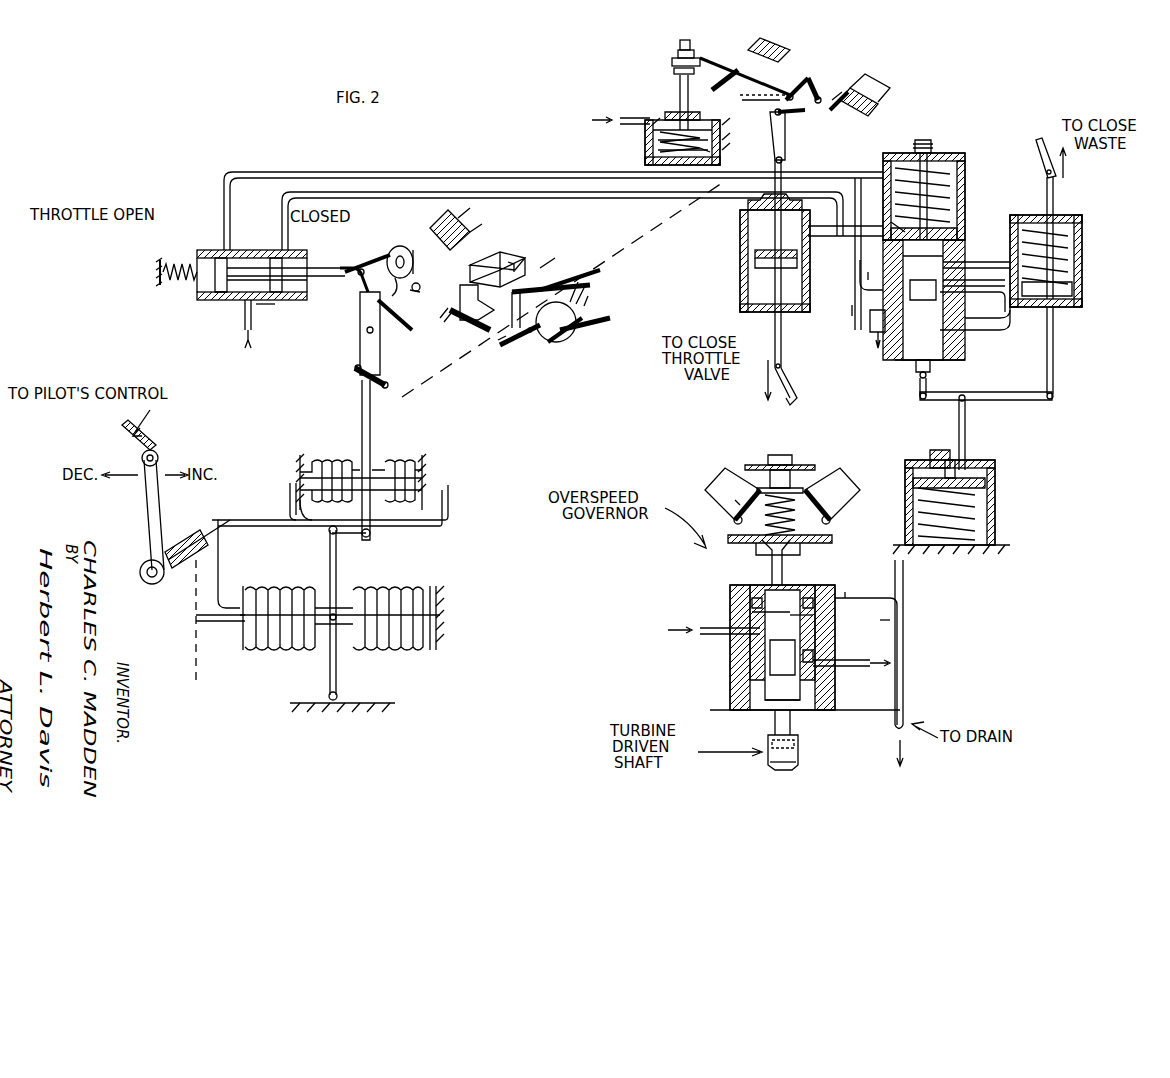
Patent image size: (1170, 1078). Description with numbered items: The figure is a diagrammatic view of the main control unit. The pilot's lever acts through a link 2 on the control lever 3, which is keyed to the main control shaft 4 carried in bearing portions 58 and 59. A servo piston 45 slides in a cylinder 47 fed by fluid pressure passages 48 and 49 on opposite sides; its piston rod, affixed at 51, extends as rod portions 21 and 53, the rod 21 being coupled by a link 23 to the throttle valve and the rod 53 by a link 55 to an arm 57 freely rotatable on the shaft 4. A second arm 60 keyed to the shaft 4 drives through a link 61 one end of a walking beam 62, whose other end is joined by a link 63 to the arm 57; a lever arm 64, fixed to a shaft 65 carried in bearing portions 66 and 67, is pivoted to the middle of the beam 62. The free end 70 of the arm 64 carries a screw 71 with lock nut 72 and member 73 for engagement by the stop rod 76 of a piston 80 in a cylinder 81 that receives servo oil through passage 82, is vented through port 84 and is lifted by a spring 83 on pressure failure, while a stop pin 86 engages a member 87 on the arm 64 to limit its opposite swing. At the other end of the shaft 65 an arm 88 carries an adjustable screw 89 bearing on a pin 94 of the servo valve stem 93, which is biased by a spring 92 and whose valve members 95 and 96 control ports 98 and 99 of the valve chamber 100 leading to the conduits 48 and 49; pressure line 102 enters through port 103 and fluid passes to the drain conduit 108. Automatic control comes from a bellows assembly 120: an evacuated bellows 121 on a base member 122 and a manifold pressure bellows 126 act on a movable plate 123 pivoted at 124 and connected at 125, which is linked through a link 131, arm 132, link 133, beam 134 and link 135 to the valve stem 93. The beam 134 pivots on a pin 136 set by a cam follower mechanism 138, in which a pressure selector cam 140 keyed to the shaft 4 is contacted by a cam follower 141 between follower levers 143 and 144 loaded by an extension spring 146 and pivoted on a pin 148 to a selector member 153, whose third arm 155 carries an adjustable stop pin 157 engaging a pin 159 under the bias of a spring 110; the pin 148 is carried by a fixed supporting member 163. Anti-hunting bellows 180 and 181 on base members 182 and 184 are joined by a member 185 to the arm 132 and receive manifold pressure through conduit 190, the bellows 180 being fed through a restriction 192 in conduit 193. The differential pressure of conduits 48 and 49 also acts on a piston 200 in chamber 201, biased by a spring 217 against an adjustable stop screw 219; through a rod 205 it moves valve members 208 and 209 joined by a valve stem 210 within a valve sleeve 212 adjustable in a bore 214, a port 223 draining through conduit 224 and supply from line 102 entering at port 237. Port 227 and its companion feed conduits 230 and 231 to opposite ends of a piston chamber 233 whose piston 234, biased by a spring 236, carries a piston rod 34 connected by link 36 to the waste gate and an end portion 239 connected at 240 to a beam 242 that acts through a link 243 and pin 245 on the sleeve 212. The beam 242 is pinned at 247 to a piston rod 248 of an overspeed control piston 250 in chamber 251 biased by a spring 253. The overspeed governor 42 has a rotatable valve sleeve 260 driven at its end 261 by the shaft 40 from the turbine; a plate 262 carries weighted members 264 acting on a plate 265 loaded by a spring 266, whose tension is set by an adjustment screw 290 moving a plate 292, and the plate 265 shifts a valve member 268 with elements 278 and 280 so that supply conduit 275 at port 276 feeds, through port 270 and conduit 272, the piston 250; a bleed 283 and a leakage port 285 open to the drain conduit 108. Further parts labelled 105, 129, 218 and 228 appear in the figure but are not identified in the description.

The link 2 is at (156, 446).
The control lever 3 is at (145, 504).
The main control shaft 4 is at (506, 344).
The piston rod 21 is at (790, 340).
The link 23 is at (800, 382).
The piston rod 34 is at (1058, 196).
The link 36 is at (1044, 170).
The shaft 40 is at (800, 760).
The overspeed governor 42 is at (736, 494).
The servo piston 45 is at (748, 262).
The cylinder 47 is at (740, 292).
The fluid pressure inlet passage 48 is at (618, 190).
The fluid pressure inlet passage 49 is at (420, 170).
The piston rod attachment 51 is at (755, 252).
The piston rod 53 is at (748, 208).
The link 55 is at (784, 150).
The arm 57 is at (804, 94).
The bearing portion 58 is at (182, 540).
The bearing portion 59 is at (858, 90).
The second arm 60 is at (834, 114).
The link 61 is at (816, 90).
The walking beam 62 is at (800, 80).
The link 63 is at (772, 118).
The lever arm 64 is at (760, 72).
The shaft 65 is at (726, 88).
The bearing portion 66 is at (760, 42).
The bearing portion 67 is at (438, 232).
The free end 70 is at (672, 60).
The screw 71 is at (688, 48).
The lock nut 72 is at (680, 54).
The member 73 is at (672, 76).
The stop rod 76 is at (678, 92).
The piston 80 is at (630, 136).
The cylinder 81 is at (645, 150).
The passage 82 is at (622, 118).
The spring 83 is at (705, 144).
The port 84 is at (716, 156).
The stop pin 86 is at (768, 98).
The member 87 is at (748, 96).
The arm 88 is at (398, 246).
The adjustable screw 89 is at (420, 290).
The spring 92 is at (170, 262).
The valve stem 93 is at (318, 270).
The pin 94 is at (376, 255).
The valve member 95 is at (300, 282).
The valve member 96 is at (212, 282).
The port 98 is at (282, 258).
The port 99 is at (216, 256).
The valve chamber 100 is at (245, 250).
The fluid pressure line 102 is at (256, 302).
The port 103 is at (245, 298).
The outlet pipe 105 is at (836, 664).
The drain passage 108 is at (905, 676).
The spring 110 is at (476, 318).
The bellows assembly 120 is at (416, 578).
The evacuated bellows 121 is at (388, 618).
The base member 122 is at (444, 618).
The movable plate 123 is at (330, 676).
The pivot 124 is at (340, 696).
The pivotal connection 125 is at (324, 612).
The bellows 126 is at (240, 598).
The pipe 129 is at (240, 636).
The link 131 is at (366, 538).
The arm 132 is at (372, 430).
The link 133 is at (372, 372).
The beam 134 is at (392, 330).
The link 135 is at (366, 288).
The pin 136 is at (412, 318).
The cam follower mechanism 138 is at (550, 260).
The pressure selector cam 140 is at (565, 335).
The cam follower 141 is at (556, 345).
The follower lever 143 is at (536, 340).
The follower lever 144 is at (590, 332).
The extension spring 146 is at (580, 318).
The pin 148 is at (465, 328).
The selector member 153 is at (508, 252).
The third arm 155 is at (520, 262).
The adjustable stop pin 157 is at (525, 290).
The pin 159 is at (522, 308).
The supporting member 163 is at (450, 302).
The bellows 180 is at (344, 462).
The bellows 181 is at (370, 478).
The base member 182 is at (298, 462).
The base member 184 is at (428, 468).
The member 185 is at (361, 484).
The conduit 190 is at (262, 522).
The restriction 192 is at (290, 498).
The conduit 193 is at (304, 520).
The piston 200 is at (935, 165).
The piston chamber 201 is at (960, 200).
The rod 205 is at (958, 232).
The valve member 208 is at (977, 294).
The valve member 209 is at (950, 344).
The valve stem 210 is at (940, 304).
The valve sleeve 212 is at (903, 248).
The bore 214 is at (916, 362).
The spring 217 is at (948, 186).
The chamber 218 is at (892, 222).
The adjustable stop screw 219 is at (930, 148).
The port 223 is at (903, 262).
The conduit 224 is at (873, 281).
The port 227 is at (975, 336).
The passage 228 is at (962, 280).
The conduit 230 is at (980, 250).
The conduit 231 is at (1000, 320).
The piston chamber 233 is at (1082, 255).
The piston 234 is at (1080, 290).
The spring 236 is at (1068, 240).
The port 237 is at (872, 332).
The end portion 239 is at (1054, 350).
The connection 240 is at (1054, 375).
The beam 242 is at (1000, 400).
The link 243 is at (920, 392).
The pin 245 is at (926, 374).
The pin 247 is at (958, 404).
The piston rod 248 is at (968, 435).
The overspeed control piston 250 is at (965, 480).
The piston chamber 251 is at (985, 516).
The spring 253 is at (995, 545).
The rotatable valve sleeve 260 is at (768, 710).
The end 261 is at (795, 726).
The plate 262 is at (740, 570).
The weighted members 264 is at (720, 545).
The plate 265 is at (820, 525).
The spring 266 is at (768, 500).
The valve member 268 is at (790, 580).
The port 270 is at (820, 620).
The conduit 272 is at (820, 600).
The fluid supply conduit 275 is at (710, 635).
The port 276 is at (752, 618).
The valve element 278 is at (752, 604).
The valve element 280 is at (820, 648).
The bleed 283 is at (903, 630).
The port 285 is at (800, 680).
The adjustment screw 290 is at (782, 462).
The plate 292 is at (808, 488).